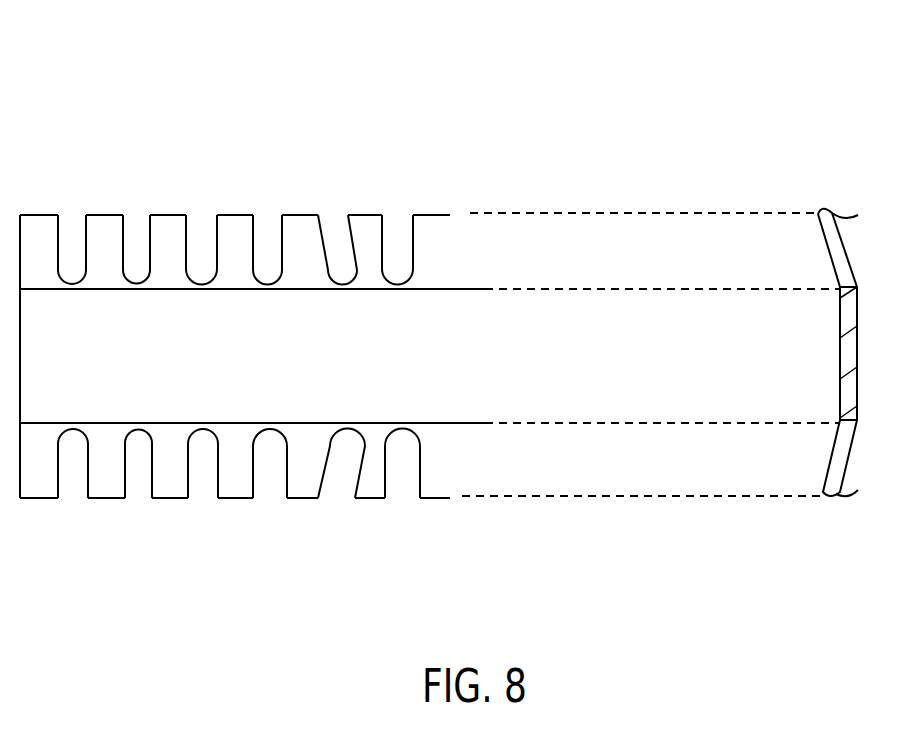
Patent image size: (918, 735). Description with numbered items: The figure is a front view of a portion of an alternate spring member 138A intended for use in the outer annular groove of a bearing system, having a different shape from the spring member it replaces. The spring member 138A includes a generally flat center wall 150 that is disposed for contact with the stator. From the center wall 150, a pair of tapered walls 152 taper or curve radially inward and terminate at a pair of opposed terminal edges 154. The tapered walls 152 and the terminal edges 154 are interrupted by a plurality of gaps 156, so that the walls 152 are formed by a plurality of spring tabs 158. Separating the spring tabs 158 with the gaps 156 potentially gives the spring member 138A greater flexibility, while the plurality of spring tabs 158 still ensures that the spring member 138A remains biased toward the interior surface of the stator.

The spring member 138A is at (515, 130).
The center wall 150 is at (840, 367).
The tapered walls 152 is at (795, 228).
The terminal edges 154 is at (711, 212).
The gaps 156 is at (200, 223).
The spring tabs 158 is at (101, 214).